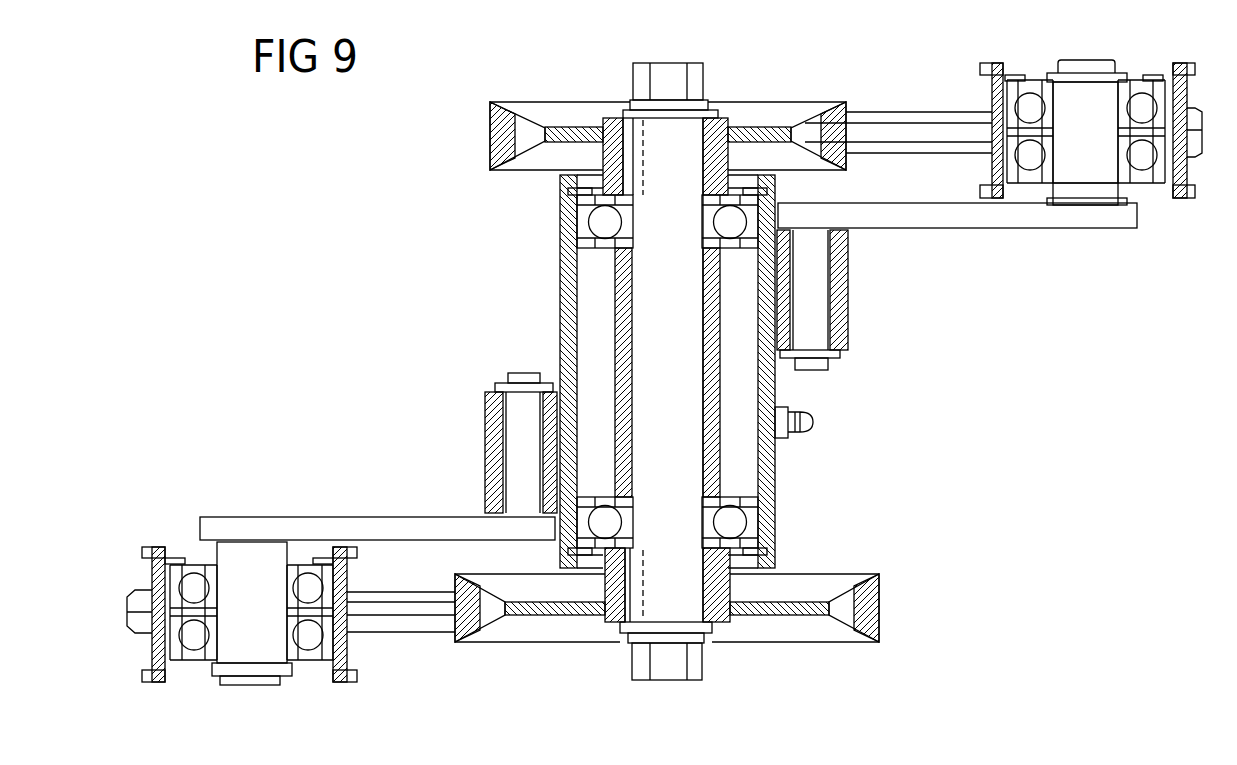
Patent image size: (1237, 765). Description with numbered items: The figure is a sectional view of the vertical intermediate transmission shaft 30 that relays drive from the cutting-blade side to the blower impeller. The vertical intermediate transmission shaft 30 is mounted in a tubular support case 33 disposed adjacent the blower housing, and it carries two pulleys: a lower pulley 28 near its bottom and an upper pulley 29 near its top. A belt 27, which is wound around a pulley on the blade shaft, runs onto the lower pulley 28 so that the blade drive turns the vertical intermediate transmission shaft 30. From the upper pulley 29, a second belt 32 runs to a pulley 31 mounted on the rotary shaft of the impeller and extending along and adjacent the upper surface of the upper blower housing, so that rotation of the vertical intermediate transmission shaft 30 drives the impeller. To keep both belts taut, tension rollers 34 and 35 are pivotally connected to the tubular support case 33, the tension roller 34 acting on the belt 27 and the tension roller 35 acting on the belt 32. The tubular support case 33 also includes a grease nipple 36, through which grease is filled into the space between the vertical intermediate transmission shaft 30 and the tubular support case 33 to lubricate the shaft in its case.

The belt 27 is at (410, 627).
The lower pulley 28 is at (533, 632).
The upper pulley 29 is at (758, 102).
The vertical intermediate transmission shaft 30 is at (683, 472).
The pulley 31 is at (518, 108).
The belt 32 is at (890, 112).
The tubular support case 33 is at (557, 305).
The tension roller 34 is at (152, 545).
The tension roller 35 is at (1012, 77).
The grease nipple 36 is at (813, 420).